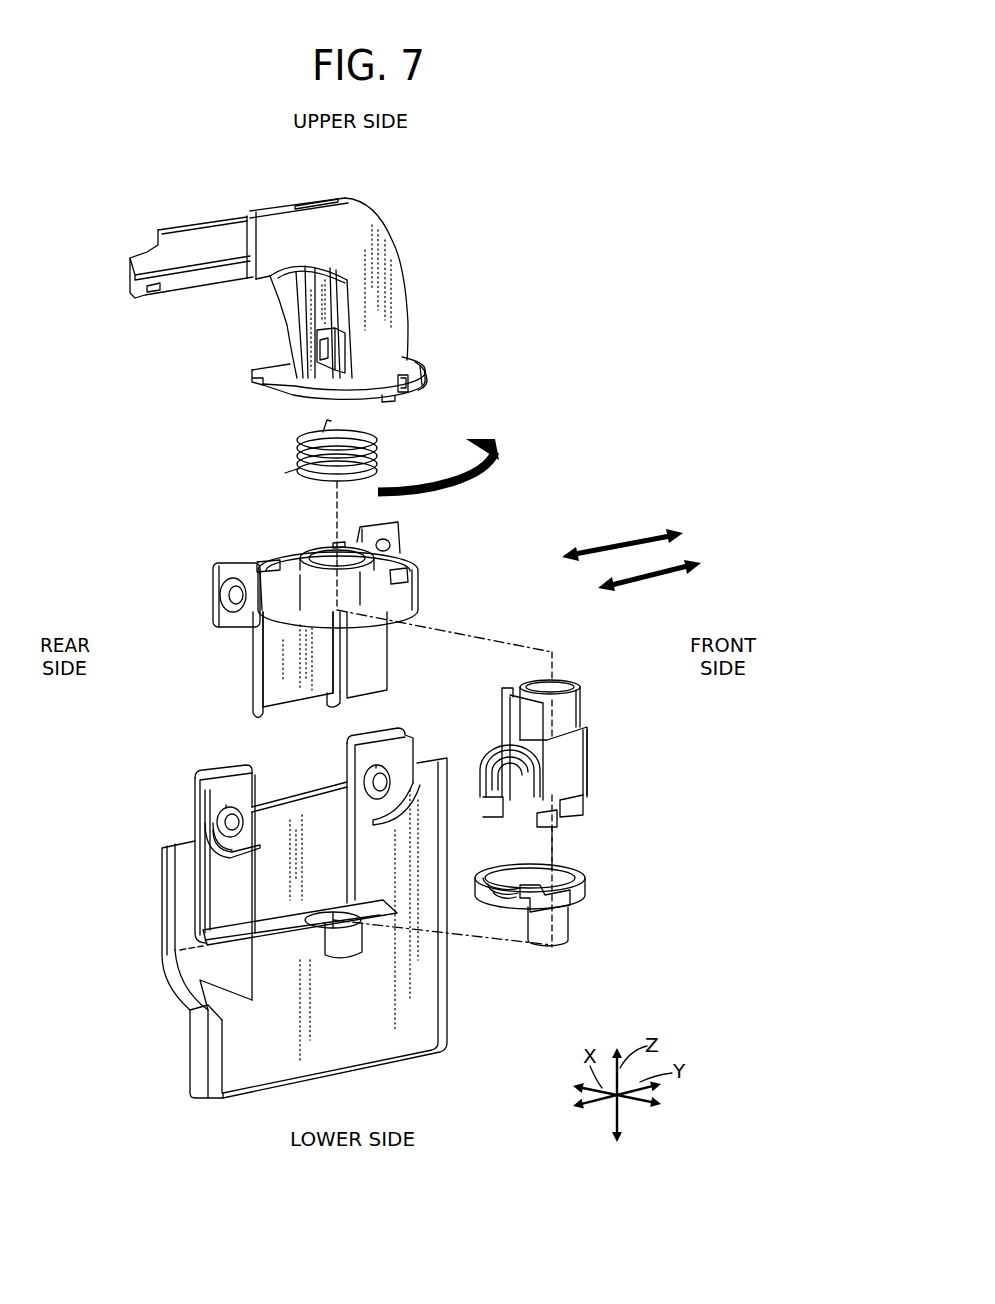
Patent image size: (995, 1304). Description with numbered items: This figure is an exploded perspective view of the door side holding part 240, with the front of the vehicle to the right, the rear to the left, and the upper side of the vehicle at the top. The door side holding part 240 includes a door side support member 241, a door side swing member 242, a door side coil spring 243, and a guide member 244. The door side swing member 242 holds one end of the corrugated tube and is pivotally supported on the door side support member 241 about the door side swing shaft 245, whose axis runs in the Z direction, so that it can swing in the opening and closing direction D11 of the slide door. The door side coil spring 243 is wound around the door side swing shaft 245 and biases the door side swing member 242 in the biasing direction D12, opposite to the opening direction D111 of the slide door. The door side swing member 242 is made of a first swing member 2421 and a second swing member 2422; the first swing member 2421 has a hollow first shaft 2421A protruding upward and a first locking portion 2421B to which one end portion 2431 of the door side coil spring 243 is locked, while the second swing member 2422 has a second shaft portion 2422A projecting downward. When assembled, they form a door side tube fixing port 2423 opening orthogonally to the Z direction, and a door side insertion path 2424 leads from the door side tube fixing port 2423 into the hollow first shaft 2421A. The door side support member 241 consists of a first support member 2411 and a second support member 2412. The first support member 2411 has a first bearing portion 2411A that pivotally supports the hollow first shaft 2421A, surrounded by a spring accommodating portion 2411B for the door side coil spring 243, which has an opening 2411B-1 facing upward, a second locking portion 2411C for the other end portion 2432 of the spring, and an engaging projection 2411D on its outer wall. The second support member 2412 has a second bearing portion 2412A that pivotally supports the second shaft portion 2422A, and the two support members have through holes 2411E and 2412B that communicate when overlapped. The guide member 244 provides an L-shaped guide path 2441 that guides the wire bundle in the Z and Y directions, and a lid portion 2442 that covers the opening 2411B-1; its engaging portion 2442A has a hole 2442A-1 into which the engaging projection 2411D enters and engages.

The door side holding part 240 is at (511, 196).
The door side support member 241 is at (225, 737).
The door side swing member 242 is at (600, 768).
The door side coil spring 243 is at (297, 445).
The guide member 244 is at (382, 213).
The door side swing shaft 245 is at (550, 855).
The first support member 2411 is at (253, 655).
The first bearing portion 2411A is at (337, 556).
The spring accommodating portion 2411B is at (420, 600).
The opening 2411B-1 is at (353, 573).
The second locking portion 2411C is at (277, 560).
The engaging projection 2411D is at (417, 577).
The through holes 2411E is at (233, 598).
The second support member 2412 is at (162, 935).
The second bearing portion 2412A is at (340, 921).
The through holes 2412B is at (370, 782).
The first swing member 2421 is at (588, 795).
The hollow first shaft 2421A is at (582, 697).
The first locking portion 2421B is at (502, 693).
The second swing member 2422 is at (585, 880).
The second shaft portion 2422A is at (568, 925).
The door side tube fixing port 2423 is at (495, 873).
The door side insertion path 2424 is at (568, 680).
The one end portion of the coil spring 2431 is at (292, 470).
The another end portion of the coil spring 2432 is at (332, 423).
The L-shaped guide path 2441 is at (377, 254).
The lid portion 2442 is at (310, 400).
The engaging portion 2442A is at (420, 400).
The hole 2442A-1 is at (410, 370).
The opening and closing direction D11 is at (612, 547).
The opening direction D111 is at (670, 580).
The biasing direction D12 is at (497, 473).